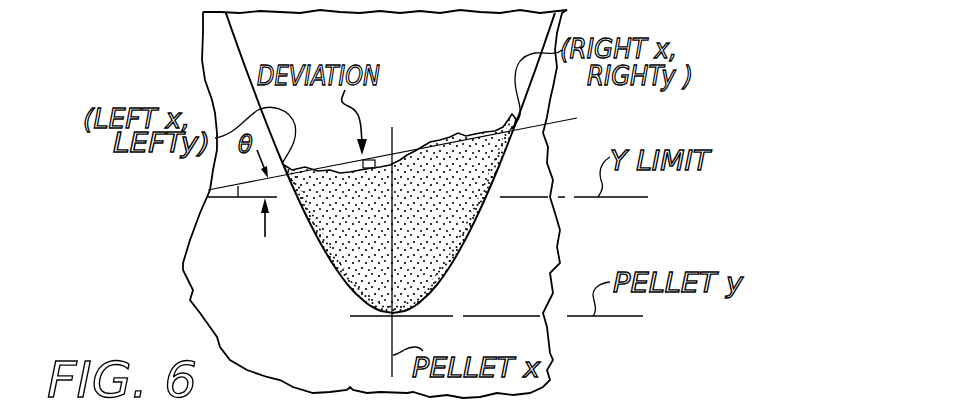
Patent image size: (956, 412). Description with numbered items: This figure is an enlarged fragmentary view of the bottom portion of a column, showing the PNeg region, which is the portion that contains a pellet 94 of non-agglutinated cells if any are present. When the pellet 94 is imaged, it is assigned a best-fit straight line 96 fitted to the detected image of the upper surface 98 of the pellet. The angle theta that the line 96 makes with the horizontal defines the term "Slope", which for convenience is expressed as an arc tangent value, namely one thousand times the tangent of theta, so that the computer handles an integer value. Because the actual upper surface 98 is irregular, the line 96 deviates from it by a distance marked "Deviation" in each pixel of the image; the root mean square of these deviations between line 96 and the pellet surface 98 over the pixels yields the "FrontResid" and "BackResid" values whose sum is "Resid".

The pellet 94 is at (467, 231).
The line 96 is at (238, 197).
The upper surface of the pellet 98 is at (441, 140).